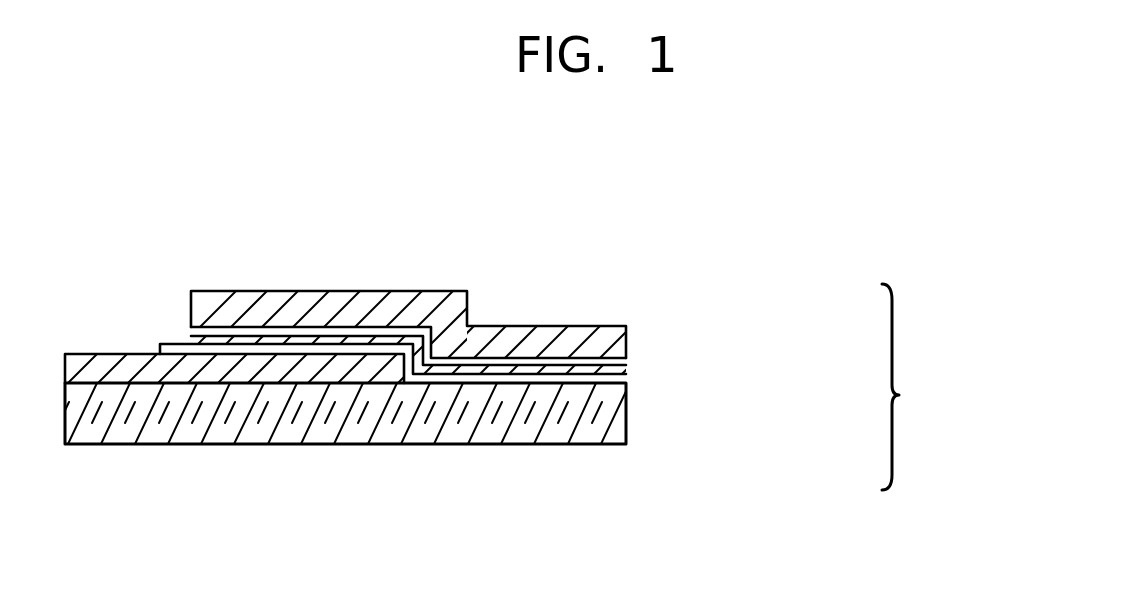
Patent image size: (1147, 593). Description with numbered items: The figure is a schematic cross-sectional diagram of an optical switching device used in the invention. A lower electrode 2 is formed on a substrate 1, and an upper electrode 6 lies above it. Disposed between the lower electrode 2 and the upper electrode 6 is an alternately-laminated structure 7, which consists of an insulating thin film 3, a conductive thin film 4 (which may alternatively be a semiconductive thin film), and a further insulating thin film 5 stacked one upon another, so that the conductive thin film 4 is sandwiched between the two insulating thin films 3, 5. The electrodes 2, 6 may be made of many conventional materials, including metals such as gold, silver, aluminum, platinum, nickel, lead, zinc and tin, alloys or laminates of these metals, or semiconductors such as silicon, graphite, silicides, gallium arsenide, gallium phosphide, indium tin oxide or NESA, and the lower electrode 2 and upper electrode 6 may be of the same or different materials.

The substrate 1 is at (572, 430).
The lower electrode 2 is at (117, 358).
The insulating thin film 3 is at (627, 383).
The conductive thin film 4 is at (623, 371).
The insulating thin film 5 is at (626, 361).
The upper electrode 6 is at (432, 300).
The alternately-laminated structure 7 is at (997, 387).